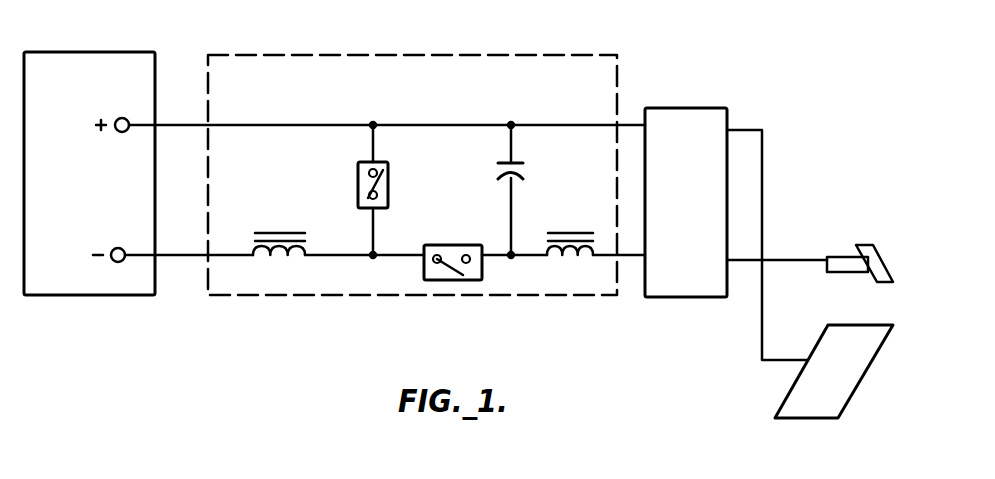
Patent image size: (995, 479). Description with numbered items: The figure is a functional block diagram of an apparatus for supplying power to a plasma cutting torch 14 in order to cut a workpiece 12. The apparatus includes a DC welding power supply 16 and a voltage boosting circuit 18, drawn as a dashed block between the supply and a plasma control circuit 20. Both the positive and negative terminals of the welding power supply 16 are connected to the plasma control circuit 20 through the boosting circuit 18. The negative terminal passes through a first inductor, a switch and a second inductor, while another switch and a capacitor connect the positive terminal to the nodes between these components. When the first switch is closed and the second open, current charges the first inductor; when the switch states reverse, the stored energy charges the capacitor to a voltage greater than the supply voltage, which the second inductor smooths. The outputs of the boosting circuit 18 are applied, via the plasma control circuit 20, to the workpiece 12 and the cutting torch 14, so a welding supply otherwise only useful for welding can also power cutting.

The workpiece 12 is at (810, 418).
The plasma cutting torch 14 is at (833, 252).
The DC welding power supply 16 is at (128, 52).
The voltage boosting circuit 18 is at (538, 55).
The plasma control circuit 20 is at (683, 108).